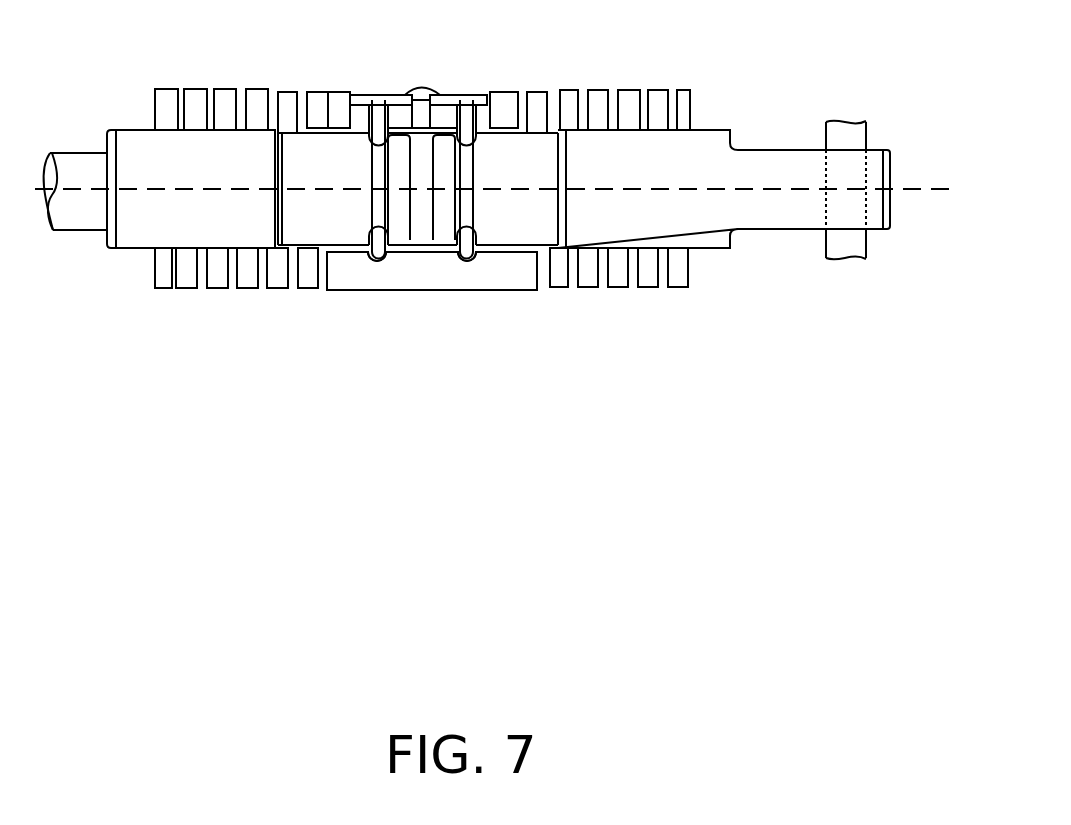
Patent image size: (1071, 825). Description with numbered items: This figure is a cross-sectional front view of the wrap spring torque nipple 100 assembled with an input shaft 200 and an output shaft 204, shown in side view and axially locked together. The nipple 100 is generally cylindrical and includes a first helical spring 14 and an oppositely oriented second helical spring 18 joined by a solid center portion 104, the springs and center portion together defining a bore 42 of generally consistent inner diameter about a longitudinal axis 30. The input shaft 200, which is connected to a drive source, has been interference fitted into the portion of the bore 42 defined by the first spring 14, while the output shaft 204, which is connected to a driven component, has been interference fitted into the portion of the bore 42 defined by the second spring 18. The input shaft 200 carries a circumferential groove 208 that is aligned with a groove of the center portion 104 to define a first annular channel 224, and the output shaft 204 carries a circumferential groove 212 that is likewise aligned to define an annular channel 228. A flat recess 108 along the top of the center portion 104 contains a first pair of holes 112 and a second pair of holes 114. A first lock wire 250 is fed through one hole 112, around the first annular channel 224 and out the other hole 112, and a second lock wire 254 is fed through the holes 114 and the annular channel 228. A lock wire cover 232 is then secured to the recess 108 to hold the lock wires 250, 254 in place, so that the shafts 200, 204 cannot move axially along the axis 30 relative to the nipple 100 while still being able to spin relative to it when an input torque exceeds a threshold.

The first helical spring 14 is at (657, 92).
The second helical spring 18 is at (200, 97).
The longitudinal axis 30 is at (917, 190).
The bore 42 is at (230, 123).
The wrap spring torque nipple 100 is at (570, 90).
The center portion 104 is at (328, 88).
The flat recess 108 is at (398, 100).
The first pair of holes 112 is at (477, 107).
The second pair of holes 114 is at (370, 107).
The input shaft 200 is at (698, 138).
The output shaft 204 is at (143, 142).
The groove 208 is at (475, 205).
The groove 212 is at (370, 202).
The first annular channel 224 is at (470, 257).
The annular channel 228 is at (377, 257).
The lock wire cover 232 is at (448, 98).
The first lock wire 250 is at (467, 107).
The second lock wire 254 is at (378, 107).